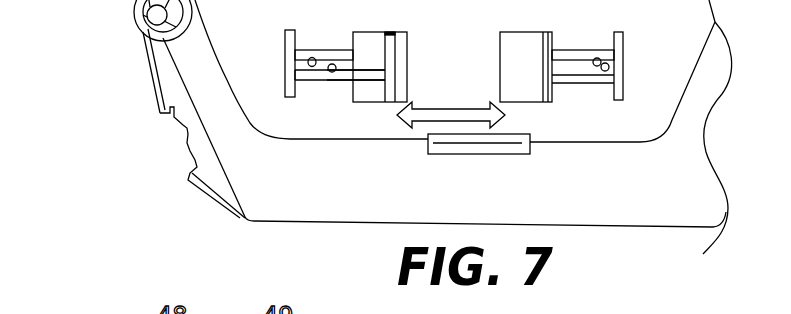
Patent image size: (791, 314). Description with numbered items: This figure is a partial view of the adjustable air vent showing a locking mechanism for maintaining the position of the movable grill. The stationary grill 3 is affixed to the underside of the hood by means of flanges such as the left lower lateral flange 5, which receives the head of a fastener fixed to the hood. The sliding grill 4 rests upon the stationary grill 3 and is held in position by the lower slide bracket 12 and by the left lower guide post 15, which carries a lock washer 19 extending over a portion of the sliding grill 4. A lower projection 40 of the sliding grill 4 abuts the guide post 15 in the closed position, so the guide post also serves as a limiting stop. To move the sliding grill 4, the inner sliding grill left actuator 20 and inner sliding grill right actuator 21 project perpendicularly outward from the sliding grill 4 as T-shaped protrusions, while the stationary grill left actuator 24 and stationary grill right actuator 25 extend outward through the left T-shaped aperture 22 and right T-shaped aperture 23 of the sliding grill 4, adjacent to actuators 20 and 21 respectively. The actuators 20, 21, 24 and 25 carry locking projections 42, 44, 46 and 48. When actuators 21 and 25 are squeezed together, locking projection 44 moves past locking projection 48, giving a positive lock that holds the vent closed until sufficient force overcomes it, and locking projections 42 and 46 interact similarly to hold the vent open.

The stationary grill 3 is at (337, 223).
The sliding grill 4 is at (235, 60).
The left lower lateral flange 5 is at (188, 153).
The lower slide bracket 12 is at (463, 148).
The left lower guide post 15 is at (148, 23).
The lock washer 19 is at (163, 38).
The inner sliding grill left actuator 20 is at (285, 98).
The inner sliding grill right actuator 21 is at (623, 90).
The left T-shaped aperture 22 is at (372, 90).
The right T-shaped aperture 23 is at (522, 90).
The stationary grill left actuator 24 is at (348, 72).
The stationary grill right actuator 25 is at (568, 75).
The lower projection 40 is at (660, 100).
The locking projection 42 is at (312, 58).
The locking projection 44 is at (597, 58).
The locking projection 46 is at (332, 72).
The locking projection 48 is at (606, 71).